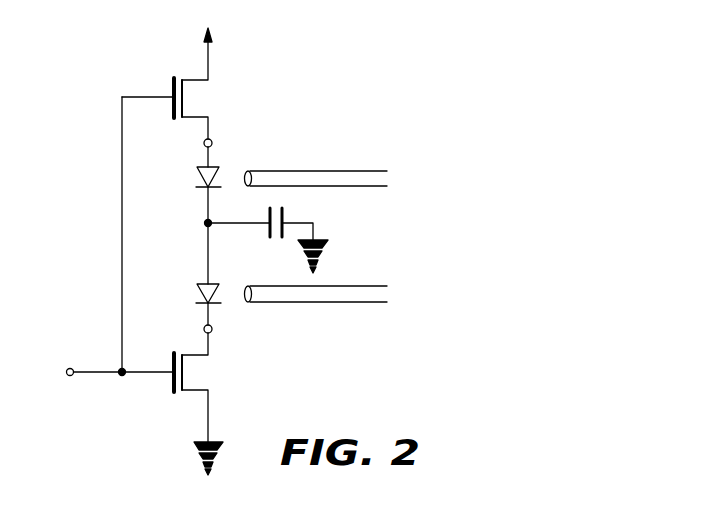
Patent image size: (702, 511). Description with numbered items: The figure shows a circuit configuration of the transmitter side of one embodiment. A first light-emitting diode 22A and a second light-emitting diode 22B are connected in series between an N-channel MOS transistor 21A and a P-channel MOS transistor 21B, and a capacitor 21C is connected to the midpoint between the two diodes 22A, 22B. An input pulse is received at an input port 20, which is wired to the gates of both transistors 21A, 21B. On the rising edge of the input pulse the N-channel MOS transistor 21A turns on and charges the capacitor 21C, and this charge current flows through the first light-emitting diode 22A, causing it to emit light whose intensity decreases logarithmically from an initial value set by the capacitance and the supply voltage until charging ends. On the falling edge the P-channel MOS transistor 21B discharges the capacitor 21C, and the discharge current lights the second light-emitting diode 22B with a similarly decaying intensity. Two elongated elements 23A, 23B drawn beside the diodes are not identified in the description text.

The input port 20 is at (69, 368).
The N-channel MOS transistor 21A is at (172, 81).
The P-channel MOS transistor 21B is at (171, 394).
The capacitor 21C is at (286, 212).
The first light-emitting diode 22A is at (216, 168).
The second light-emitting diode 22B is at (201, 284).
The first electrode 23A is at (333, 178).
The second electrode 23B is at (323, 296).